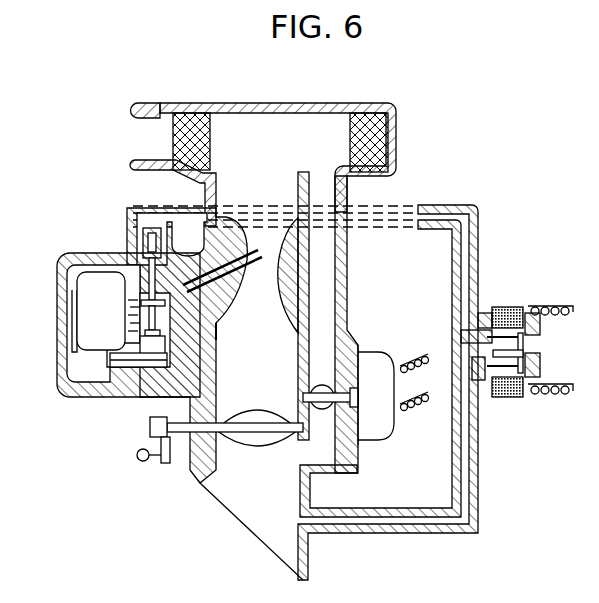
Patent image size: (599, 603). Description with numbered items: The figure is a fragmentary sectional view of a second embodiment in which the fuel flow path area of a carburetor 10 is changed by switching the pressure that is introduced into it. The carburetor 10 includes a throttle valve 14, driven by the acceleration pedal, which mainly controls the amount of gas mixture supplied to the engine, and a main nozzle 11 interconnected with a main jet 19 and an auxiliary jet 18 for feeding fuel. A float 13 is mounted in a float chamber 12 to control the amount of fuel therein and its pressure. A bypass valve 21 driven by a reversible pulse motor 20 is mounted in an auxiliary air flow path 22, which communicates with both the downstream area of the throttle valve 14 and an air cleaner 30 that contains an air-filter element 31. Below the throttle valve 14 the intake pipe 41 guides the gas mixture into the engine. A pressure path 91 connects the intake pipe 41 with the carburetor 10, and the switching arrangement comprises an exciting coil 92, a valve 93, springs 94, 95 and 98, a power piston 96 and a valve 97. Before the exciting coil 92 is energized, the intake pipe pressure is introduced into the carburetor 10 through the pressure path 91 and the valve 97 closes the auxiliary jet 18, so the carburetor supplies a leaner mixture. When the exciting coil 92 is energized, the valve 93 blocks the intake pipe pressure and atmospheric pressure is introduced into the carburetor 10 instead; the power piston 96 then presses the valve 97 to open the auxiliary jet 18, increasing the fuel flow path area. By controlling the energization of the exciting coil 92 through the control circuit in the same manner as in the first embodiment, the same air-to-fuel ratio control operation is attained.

The carburetor 10 is at (57, 281).
The main nozzle 11 is at (222, 275).
The float chamber 12 is at (72, 313).
The float 13 is at (82, 332).
The throttle valve 14 is at (260, 404).
The auxiliary jet 18 is at (157, 362).
The main jet 19 is at (110, 366).
The reversible pulse motor 20 is at (375, 432).
The bypass valve 21 is at (318, 380).
The auxiliary air flow path 22 is at (327, 263).
The air cleaner 30 is at (292, 103).
The air-filter element 31 is at (397, 134).
The intake pipe 41 is at (272, 548).
The pressure path 91 is at (478, 228).
The exciting coil 92 is at (507, 307).
The valve 93 is at (540, 347).
The spring 94 is at (488, 390).
The spring 95 is at (137, 216).
The power piston 96 is at (142, 243).
The valve 97 is at (214, 327).
The spring 98 is at (196, 350).